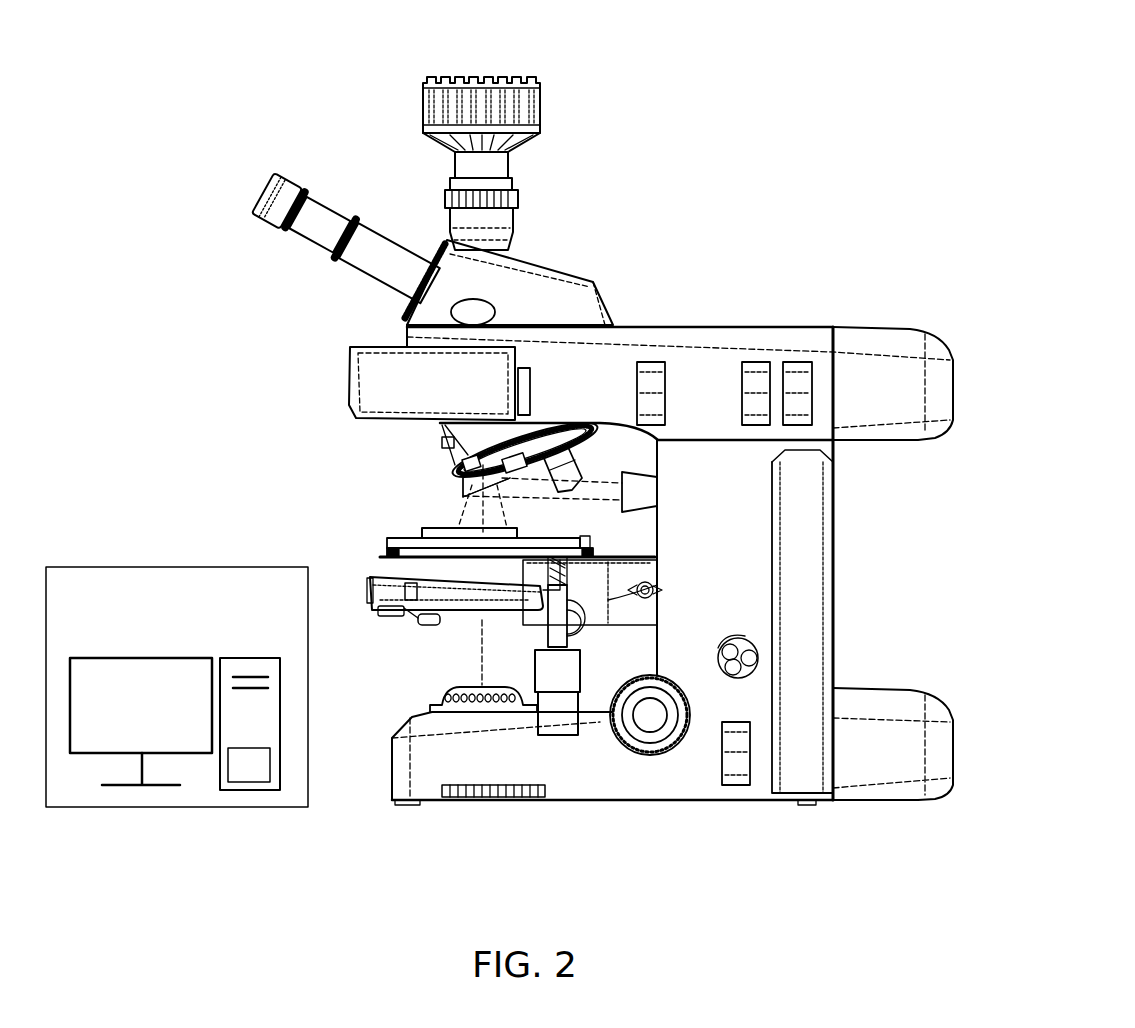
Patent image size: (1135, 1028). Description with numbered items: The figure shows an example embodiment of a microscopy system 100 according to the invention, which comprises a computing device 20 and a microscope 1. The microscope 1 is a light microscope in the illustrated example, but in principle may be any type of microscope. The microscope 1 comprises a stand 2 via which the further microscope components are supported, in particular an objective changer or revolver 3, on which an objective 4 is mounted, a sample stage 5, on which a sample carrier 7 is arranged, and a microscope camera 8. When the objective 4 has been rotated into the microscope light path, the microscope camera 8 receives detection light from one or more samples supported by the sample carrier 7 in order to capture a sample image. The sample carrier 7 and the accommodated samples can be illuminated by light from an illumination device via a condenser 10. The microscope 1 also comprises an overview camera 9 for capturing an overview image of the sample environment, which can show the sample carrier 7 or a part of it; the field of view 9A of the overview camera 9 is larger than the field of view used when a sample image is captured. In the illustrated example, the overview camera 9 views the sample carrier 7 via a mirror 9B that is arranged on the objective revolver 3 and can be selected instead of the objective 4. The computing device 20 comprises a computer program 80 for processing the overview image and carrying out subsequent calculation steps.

The microscopy system 100 is at (716, 57).
The microscope 1 is at (803, 284).
The stand 2 is at (815, 555).
The objective changer/revolver 3 is at (445, 443).
The objective 4 is at (580, 460).
The sample stage 5 is at (405, 560).
The sample carrier 7 is at (420, 540).
The microscope camera 8 is at (528, 107).
The overview camera 9 is at (627, 503).
The field of view 9A is at (458, 513).
The mirror 9B is at (460, 492).
The condenser 10 is at (421, 604).
The computing device 20 is at (171, 619).
The computer program 80 is at (239, 780).